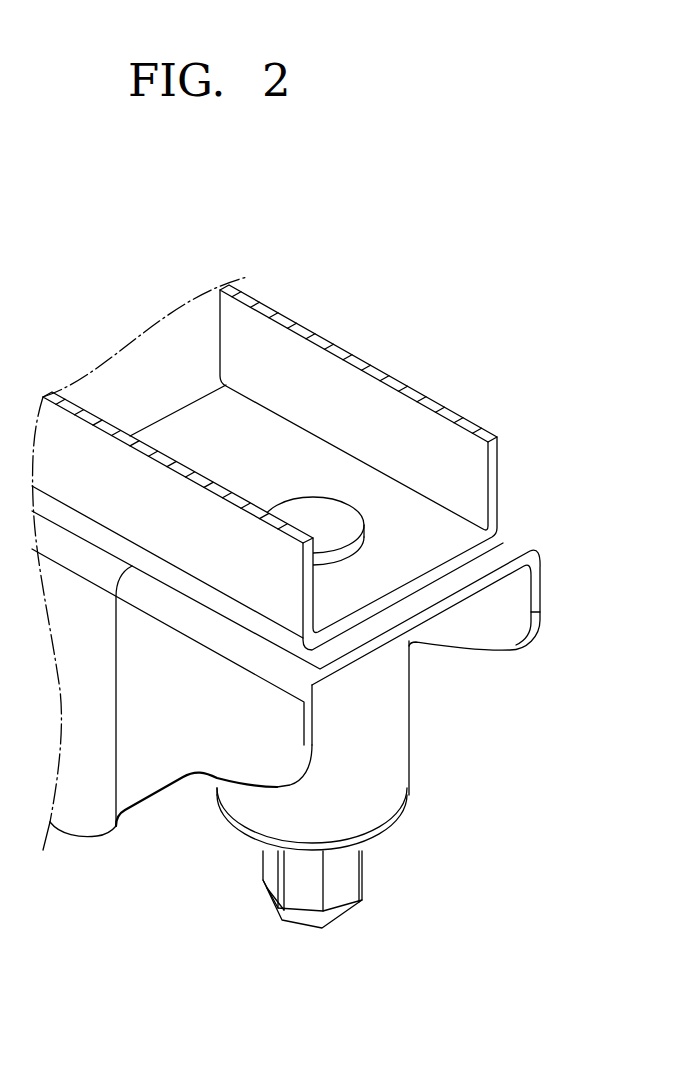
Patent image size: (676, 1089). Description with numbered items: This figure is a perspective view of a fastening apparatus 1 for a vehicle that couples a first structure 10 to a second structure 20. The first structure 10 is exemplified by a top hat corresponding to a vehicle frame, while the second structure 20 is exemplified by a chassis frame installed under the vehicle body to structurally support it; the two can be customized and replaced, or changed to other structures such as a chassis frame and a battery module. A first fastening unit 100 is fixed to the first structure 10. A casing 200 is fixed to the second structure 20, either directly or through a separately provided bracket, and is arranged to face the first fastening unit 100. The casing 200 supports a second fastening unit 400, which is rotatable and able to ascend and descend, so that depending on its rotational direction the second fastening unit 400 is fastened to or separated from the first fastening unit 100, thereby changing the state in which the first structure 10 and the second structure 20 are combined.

The fastening apparatus 1 is at (465, 724).
The first structure 10 is at (305, 377).
The second structure 20 is at (233, 732).
The first fastening unit 100 is at (328, 525).
The casing 200 is at (385, 783).
The second fastening unit 400 is at (350, 868).